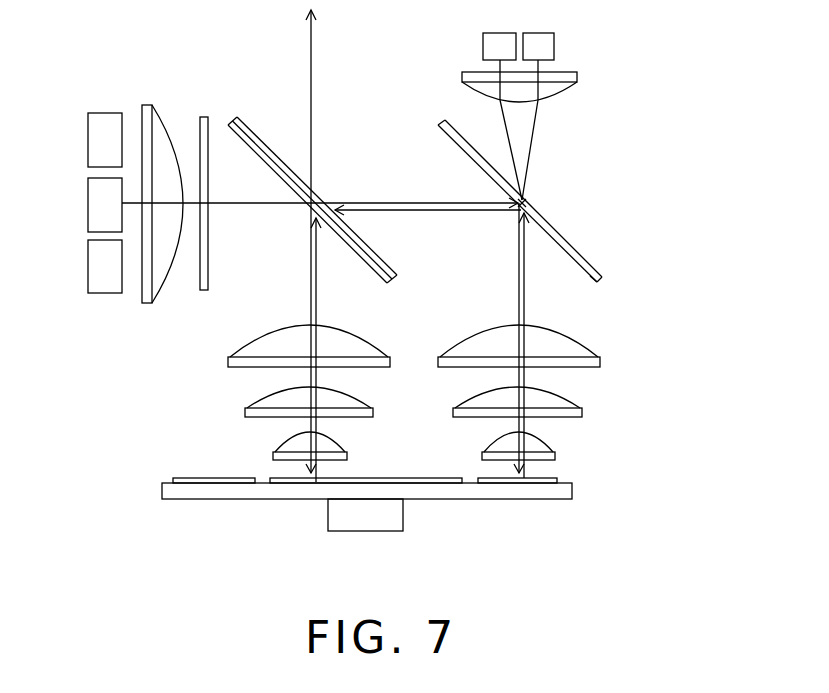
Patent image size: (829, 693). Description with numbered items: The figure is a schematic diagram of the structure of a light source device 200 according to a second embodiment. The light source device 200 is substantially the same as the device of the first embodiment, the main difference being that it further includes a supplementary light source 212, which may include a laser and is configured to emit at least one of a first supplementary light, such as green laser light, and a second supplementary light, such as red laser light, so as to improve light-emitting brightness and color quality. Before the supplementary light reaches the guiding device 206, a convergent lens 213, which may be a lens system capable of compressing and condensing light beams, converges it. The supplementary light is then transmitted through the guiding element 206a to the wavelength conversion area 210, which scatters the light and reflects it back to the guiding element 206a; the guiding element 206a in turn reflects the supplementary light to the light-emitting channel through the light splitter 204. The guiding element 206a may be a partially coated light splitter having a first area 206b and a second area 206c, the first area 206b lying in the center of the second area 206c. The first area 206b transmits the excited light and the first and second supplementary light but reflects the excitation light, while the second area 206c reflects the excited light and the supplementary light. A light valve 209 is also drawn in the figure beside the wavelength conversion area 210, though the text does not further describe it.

The light source device 200 is at (198, 39).
The light splitter 204 is at (376, 279).
The guiding device 206 is at (567, 237).
The guiding element 206a is at (520, 201).
The first area 206b is at (524, 198).
The second area 206c is at (600, 281).
The first light valve 209 is at (363, 477).
The wavelength conversion area 210 is at (555, 473).
The supplementary light source 212 is at (520, 25).
The convergent lens 213 is at (553, 98).